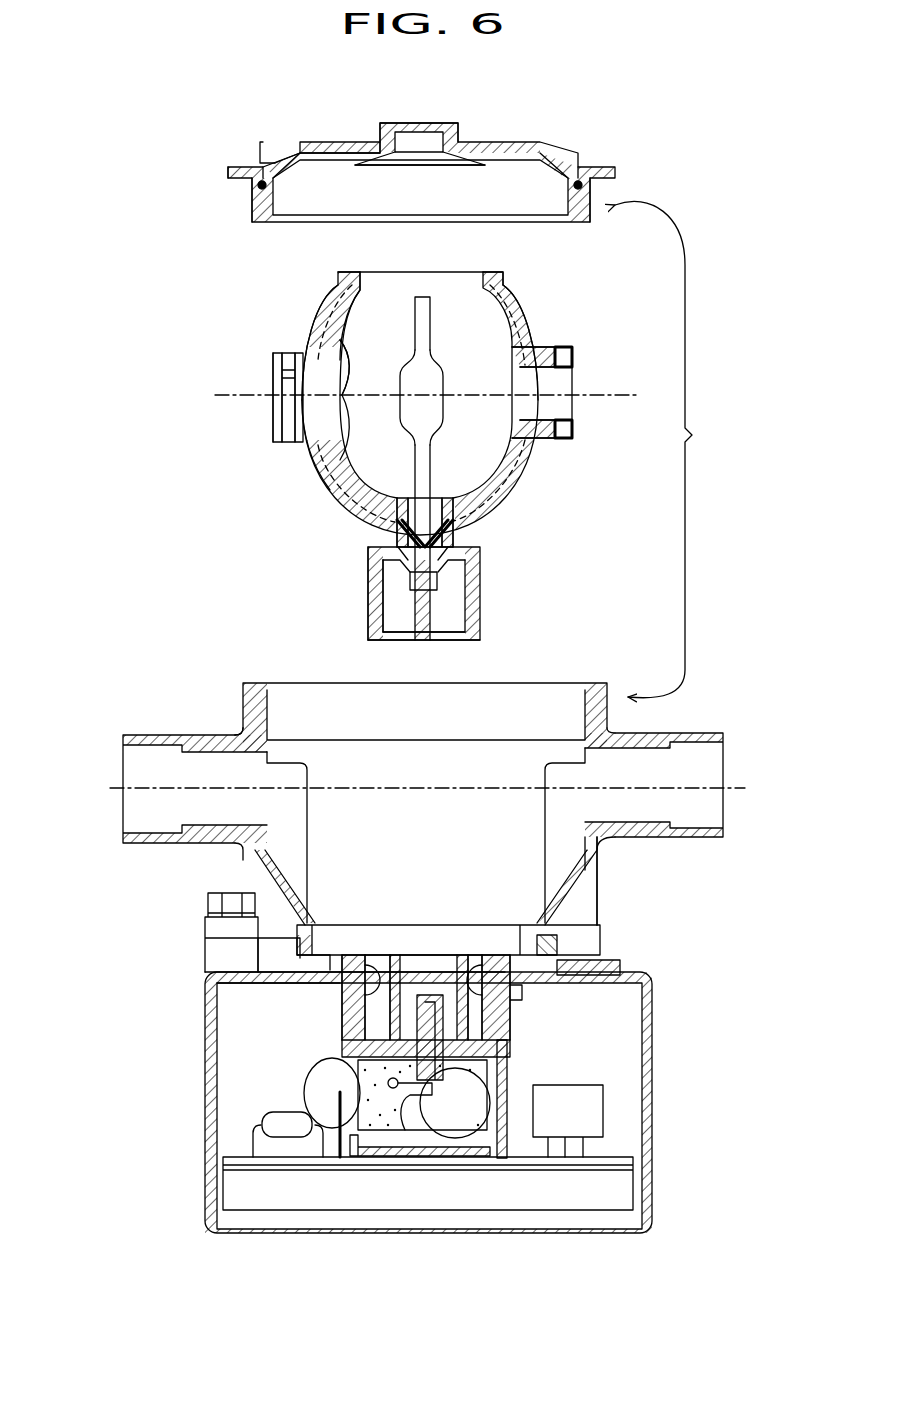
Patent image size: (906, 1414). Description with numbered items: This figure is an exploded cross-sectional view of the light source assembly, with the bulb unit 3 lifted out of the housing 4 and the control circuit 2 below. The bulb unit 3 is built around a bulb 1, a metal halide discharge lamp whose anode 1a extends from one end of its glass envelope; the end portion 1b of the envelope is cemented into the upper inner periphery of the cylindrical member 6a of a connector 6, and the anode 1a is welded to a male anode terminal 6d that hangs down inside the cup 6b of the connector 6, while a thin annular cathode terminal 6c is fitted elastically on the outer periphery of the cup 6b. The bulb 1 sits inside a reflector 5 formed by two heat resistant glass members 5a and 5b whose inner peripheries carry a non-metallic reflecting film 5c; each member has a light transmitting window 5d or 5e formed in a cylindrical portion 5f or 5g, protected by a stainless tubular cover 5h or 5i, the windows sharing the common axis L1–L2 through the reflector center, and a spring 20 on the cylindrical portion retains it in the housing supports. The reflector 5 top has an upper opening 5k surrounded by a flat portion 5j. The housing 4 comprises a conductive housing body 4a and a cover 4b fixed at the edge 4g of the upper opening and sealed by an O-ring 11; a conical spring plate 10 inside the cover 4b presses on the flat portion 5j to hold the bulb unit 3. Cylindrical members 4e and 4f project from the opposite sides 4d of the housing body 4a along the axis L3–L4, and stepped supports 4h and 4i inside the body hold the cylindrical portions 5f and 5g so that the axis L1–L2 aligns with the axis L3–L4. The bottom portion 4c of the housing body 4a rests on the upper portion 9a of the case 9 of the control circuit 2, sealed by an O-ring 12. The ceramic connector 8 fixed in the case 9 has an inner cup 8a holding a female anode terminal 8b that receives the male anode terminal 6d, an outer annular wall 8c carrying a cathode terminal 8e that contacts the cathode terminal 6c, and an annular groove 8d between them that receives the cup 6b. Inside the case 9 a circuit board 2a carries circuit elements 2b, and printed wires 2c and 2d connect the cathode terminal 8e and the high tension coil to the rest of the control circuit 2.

The bulb 1 is at (441, 392).
The anode 1a is at (395, 562).
The end portion of the glass envelope 1b is at (432, 497).
The control circuit 2 is at (656, 986).
The circuit board 2a is at (510, 1158).
The circuit elements 2b is at (282, 1158).
The printed wire 2c is at (505, 1150).
The printed wire 2d is at (340, 1150).
The bulb unit 3 is at (160, 380).
The housing 4 is at (665, 449).
The housing body 4a is at (585, 878).
The cover 4b is at (312, 152).
The bottom portion of the housing body 4c is at (335, 952).
The opposite sides of the housing body 4d is at (588, 852).
The cylindrical member 4e is at (145, 828).
The cylindrical member 4f is at (698, 805).
The edge of the upper opening 4g is at (255, 712).
The stepped support 4h is at (298, 808).
The stepped support 4i is at (556, 798).
The reflector 5 is at (508, 488).
The heat resistant glass member 5a is at (332, 312).
The heat resistant glass member 5b is at (520, 302).
The non-metallic reflecting film 5c is at (362, 318).
The light transmitting window 5d is at (280, 372).
The light transmitting window 5e is at (545, 388).
The cylindrical portion 5f is at (300, 445).
The cylindrical portion 5g is at (545, 355).
The stainless tubular cover 5h is at (280, 400).
The stainless tubular cover 5i is at (562, 442).
The flat portion 5j is at (360, 290).
The upper opening 5k is at (460, 282).
The connector 6 is at (485, 555).
The cylindrical member 6a is at (398, 497).
The cup 6b is at (482, 632).
The annular cathode terminal 6c is at (368, 590).
The male anode terminal 6d is at (462, 605).
The connector 8 is at (338, 1012).
The inner cup 8a is at (378, 990).
The female anode terminal 8b is at (440, 1060).
The outer annular wall 8c is at (360, 1035).
The annular groove 8d is at (470, 990).
The cathode terminal 8e is at (348, 990).
The case 9 is at (652, 1060).
The upper portion of the case 9a is at (305, 960).
The spring plate 10 is at (455, 140).
The O-ring 11 is at (585, 178).
The O-ring 12 is at (560, 940).
The spring 20 is at (290, 425).
The common axis L1 is at (222, 396).
The common axis L2 is at (580, 395).
The axis L3 is at (130, 790).
The axis L4 is at (725, 788).